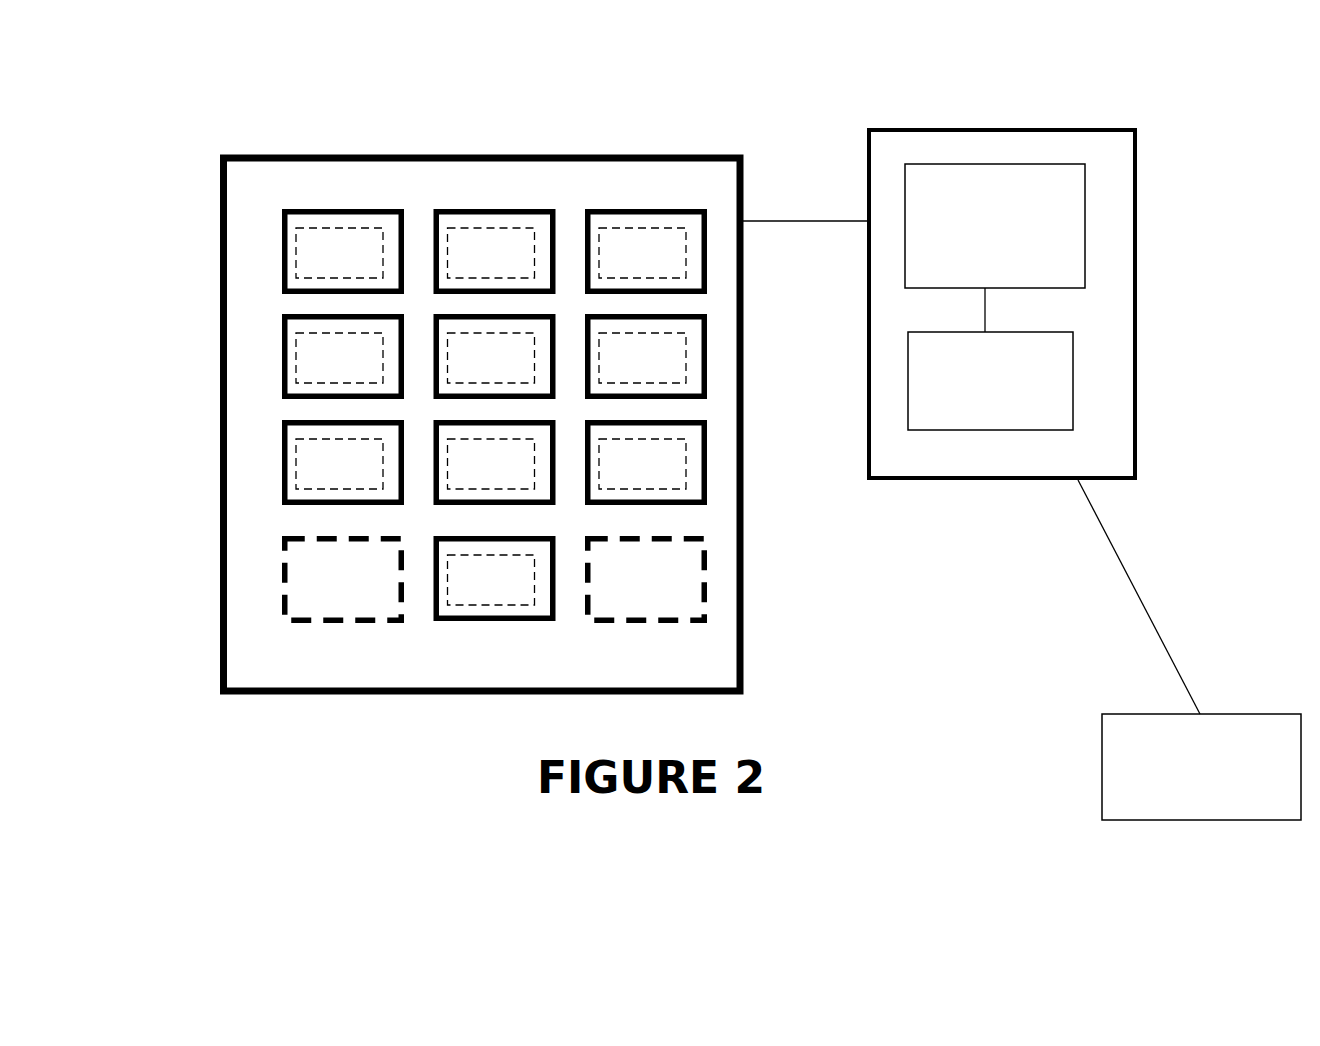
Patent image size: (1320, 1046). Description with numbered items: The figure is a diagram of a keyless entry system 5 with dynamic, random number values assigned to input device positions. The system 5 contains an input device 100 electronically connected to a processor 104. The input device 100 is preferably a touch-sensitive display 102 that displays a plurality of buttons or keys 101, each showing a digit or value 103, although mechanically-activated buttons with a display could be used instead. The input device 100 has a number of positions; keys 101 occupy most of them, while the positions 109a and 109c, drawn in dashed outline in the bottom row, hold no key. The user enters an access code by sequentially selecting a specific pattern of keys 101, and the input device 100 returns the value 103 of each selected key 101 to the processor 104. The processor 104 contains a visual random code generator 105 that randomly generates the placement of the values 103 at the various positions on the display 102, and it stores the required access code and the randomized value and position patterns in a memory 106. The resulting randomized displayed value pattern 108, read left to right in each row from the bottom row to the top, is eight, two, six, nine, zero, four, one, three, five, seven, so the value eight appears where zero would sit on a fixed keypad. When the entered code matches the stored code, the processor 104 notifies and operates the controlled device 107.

The system 5 is at (793, 580).
The input device 100 is at (456, 713).
The keys 101 is at (340, 208).
The display 102 is at (331, 644).
The value 103 is at (658, 240).
The processor 104 is at (1047, 128).
The visual random code generator 105 is at (1085, 222).
The memory 106 is at (997, 433).
The controlled device 107 is at (1102, 738).
The randomized displayed value pattern 108 is at (213, 199).
The position 109a is at (343, 580).
The position 109c is at (646, 580).